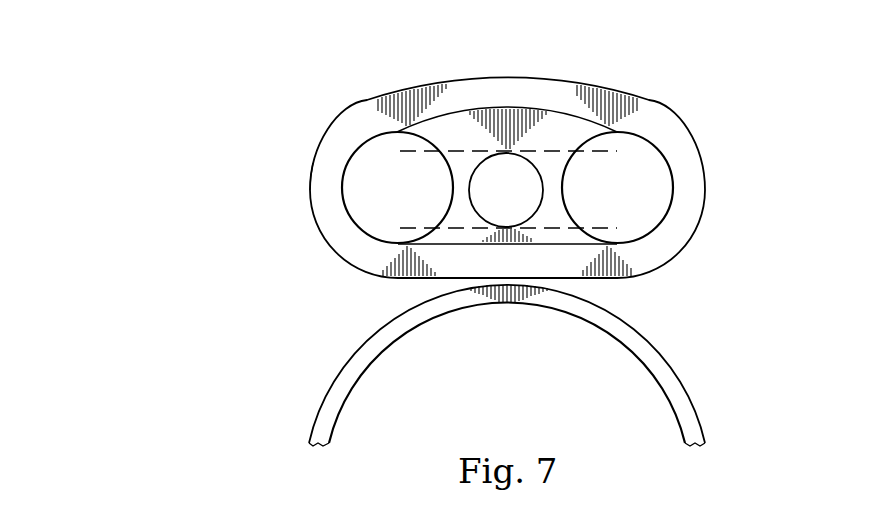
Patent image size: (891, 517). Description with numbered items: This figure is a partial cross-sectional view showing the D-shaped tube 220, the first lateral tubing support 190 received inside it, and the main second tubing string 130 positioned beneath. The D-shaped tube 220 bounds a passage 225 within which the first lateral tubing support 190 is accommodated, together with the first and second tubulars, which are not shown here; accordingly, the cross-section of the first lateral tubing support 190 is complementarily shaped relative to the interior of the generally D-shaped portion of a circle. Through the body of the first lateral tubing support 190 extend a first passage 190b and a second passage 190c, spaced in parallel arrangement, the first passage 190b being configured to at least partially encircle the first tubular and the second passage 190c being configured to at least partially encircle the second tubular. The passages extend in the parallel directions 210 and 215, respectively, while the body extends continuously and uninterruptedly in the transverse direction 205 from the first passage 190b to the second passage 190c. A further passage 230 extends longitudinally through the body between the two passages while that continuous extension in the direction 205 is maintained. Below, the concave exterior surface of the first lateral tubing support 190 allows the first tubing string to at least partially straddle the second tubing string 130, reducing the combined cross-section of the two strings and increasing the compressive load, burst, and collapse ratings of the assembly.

The second tubing string 130 is at (702, 407).
The first lateral tubing support 190 is at (461, 99).
The first passage 190b is at (656, 215).
The second passage 190c is at (354, 213).
The direction 205 is at (561, 150).
The direction 210 is at (616, 226).
The direction 215 is at (399, 226).
The D-shaped tube 220 is at (660, 118).
The passage 225 is at (343, 188).
The passage 230 is at (527, 204).